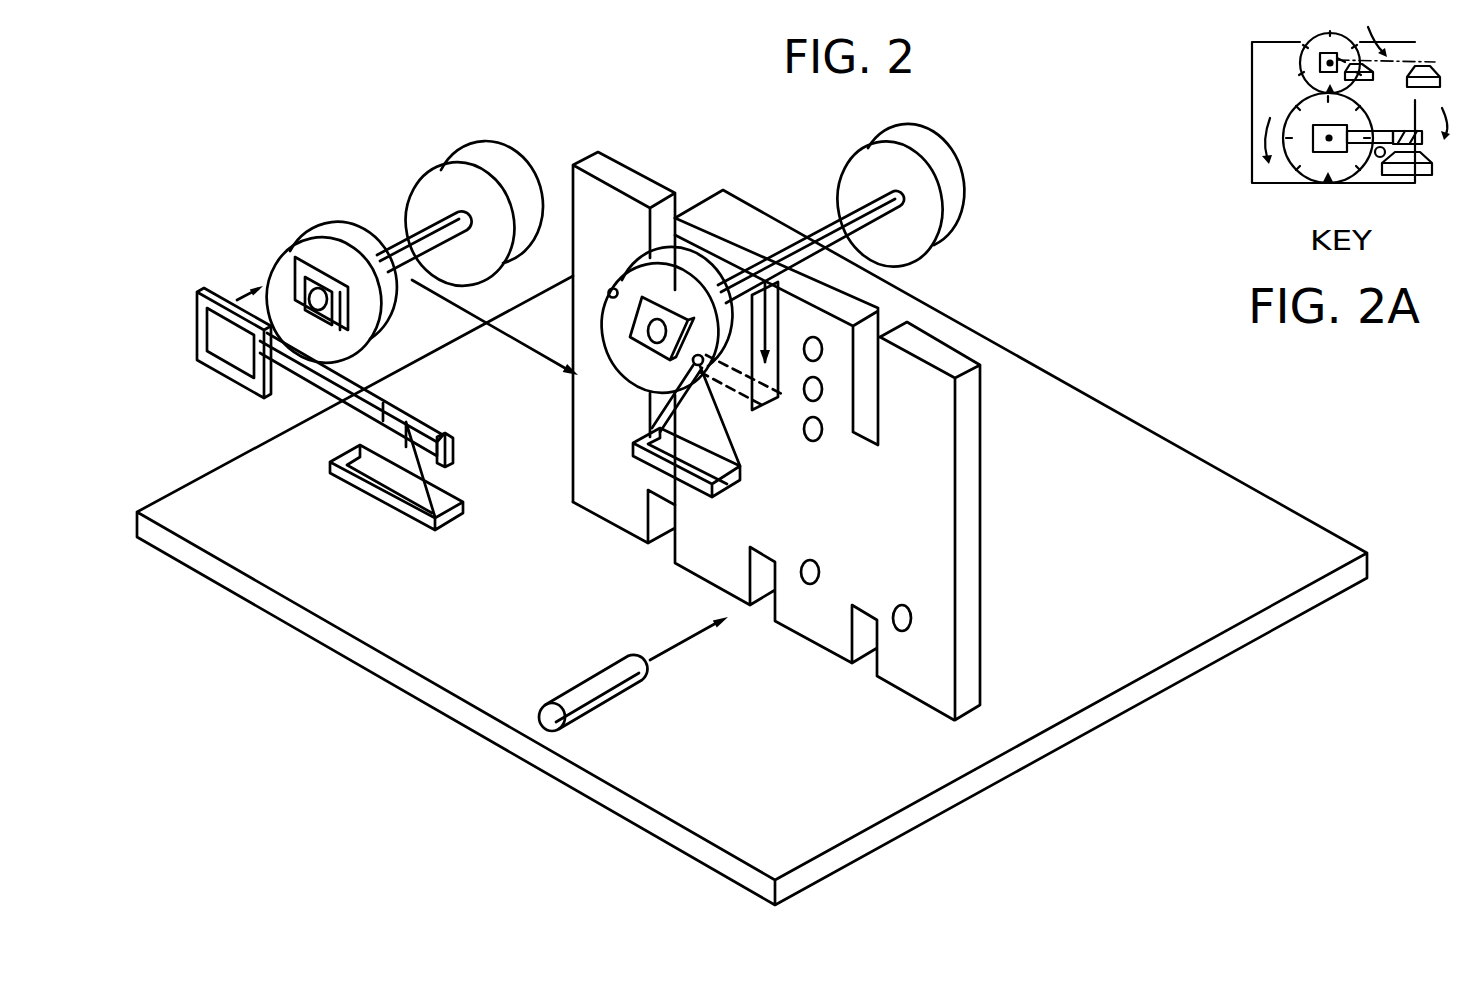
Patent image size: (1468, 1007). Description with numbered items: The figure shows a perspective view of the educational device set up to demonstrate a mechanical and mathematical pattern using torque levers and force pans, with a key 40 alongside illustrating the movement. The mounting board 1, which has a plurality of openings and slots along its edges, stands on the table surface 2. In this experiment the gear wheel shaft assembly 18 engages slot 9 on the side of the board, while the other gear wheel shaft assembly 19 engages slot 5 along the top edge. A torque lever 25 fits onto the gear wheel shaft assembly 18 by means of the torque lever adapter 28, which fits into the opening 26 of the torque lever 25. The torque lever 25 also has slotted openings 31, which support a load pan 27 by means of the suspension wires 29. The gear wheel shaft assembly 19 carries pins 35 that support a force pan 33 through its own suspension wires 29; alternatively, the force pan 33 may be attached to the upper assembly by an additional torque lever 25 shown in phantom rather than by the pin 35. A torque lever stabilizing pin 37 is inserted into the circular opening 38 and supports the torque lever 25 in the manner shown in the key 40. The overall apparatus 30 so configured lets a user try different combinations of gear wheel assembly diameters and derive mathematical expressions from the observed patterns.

In FIG. 2, the mounting board 1 is at (776, 436).
In FIG. 2, the table surface 2 is at (752, 547).
In FIG. 2, the slot 5 is at (773, 322).
In FIG. 2, the slot 9 is at (563, 367).
In FIG. 2, the gear wheel shaft assembly 18 is at (440, 158).
In FIG. 2, the gear wheel shaft assembly 19 is at (843, 157).
In FIG. 2, the torque lever 25 is at (373, 386).
In FIG. 2, the opening 26 is at (240, 348).
In FIG. 2, the load pan 27 is at (397, 507).
In FIG. 2, the torque lever adapter 28 is at (282, 265).
In FIG. 2, the suspension wires 29 is at (458, 488).
In FIG. 2, the apparatus 30 is at (1024, 506).
In FIG. 2, the slotted openings 31 is at (408, 424).
In FIG. 2, the force pan 33 is at (700, 488).
In FIG. 2, the pins 35 is at (609, 292).
In FIG. 2, the torque lever stabilizing pin 37 is at (592, 688).
In FIG. 2, the circular opening 38 is at (820, 572).
In FIG. 2A, the key 40 is at (1230, 173).